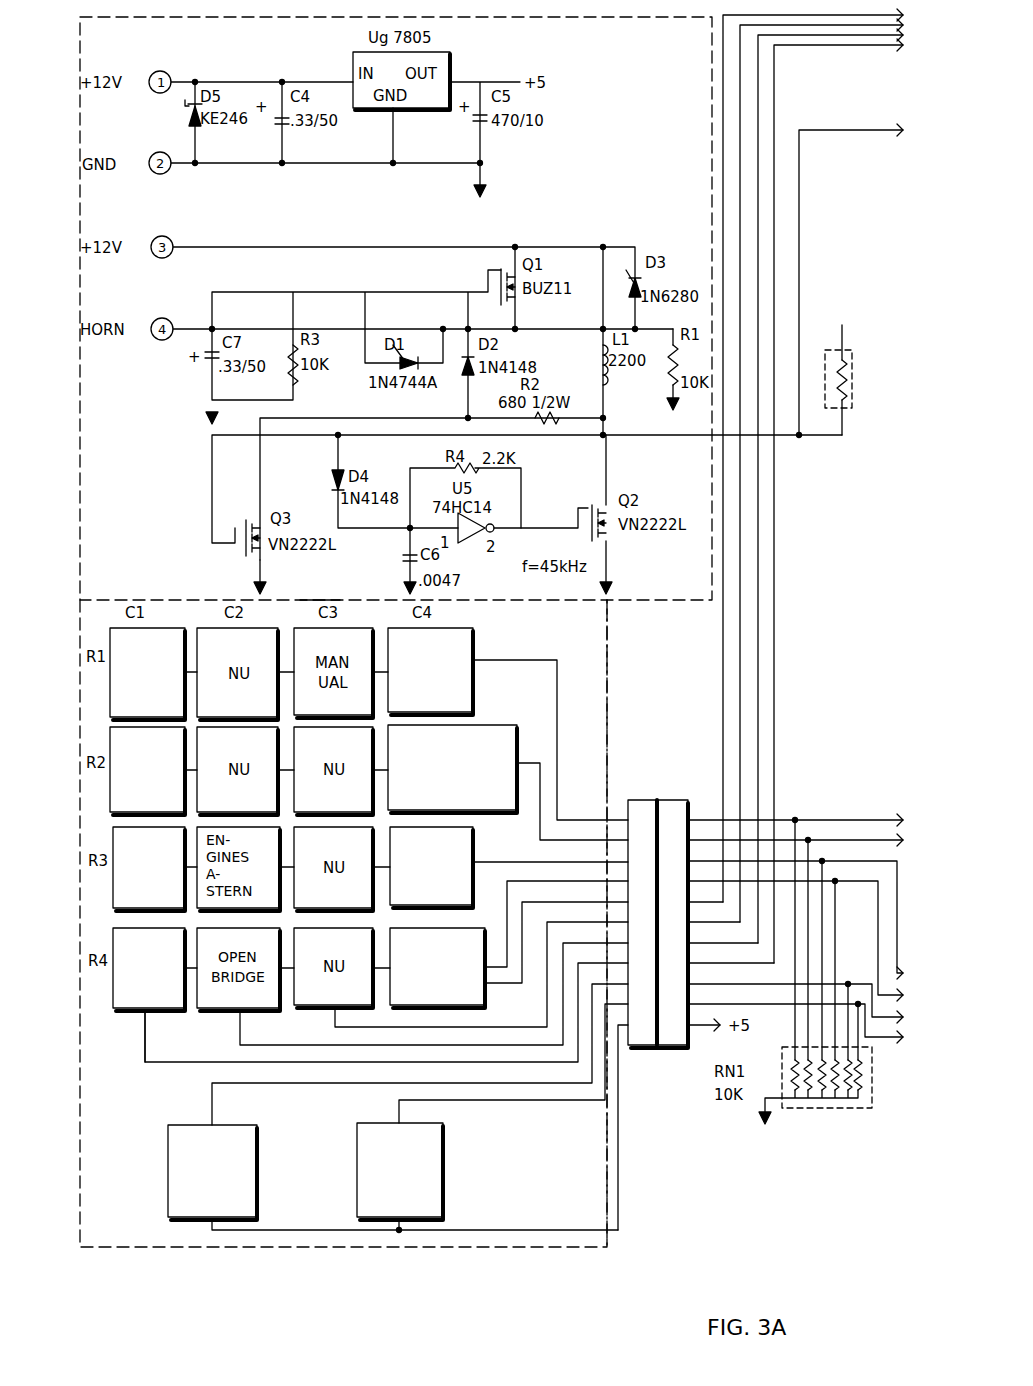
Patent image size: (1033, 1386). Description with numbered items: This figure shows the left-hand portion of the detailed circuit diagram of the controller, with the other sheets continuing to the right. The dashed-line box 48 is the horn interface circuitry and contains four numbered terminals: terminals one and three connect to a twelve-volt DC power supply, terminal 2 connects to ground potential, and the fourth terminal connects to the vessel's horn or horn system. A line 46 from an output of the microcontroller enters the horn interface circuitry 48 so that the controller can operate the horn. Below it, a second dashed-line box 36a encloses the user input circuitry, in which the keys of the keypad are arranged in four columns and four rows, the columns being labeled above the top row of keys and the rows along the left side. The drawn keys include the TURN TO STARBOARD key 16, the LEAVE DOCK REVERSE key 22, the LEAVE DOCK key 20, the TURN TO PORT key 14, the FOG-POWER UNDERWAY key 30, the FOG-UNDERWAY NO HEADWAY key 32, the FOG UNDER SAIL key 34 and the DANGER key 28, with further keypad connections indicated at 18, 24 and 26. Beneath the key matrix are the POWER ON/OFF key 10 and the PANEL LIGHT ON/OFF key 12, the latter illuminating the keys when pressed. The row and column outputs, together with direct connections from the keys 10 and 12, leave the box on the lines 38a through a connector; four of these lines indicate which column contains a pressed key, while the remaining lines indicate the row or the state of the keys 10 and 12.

The terminal 2 is at (812, 1226).
The POWER ON/OFF key 10 is at (188, 1220).
The PANEL LIGHT ON/OFF key 12 is at (375, 1220).
The turn to port switch 14 is at (113, 990).
The turn to starboard switch 16 is at (110, 640).
The switch column line 18 is at (205, 1012).
The leave dock switch 20 is at (113, 845).
The leave dock reverse switch 22 is at (110, 742).
The switch row line 24 is at (113, 813).
The switch matrix 26 is at (300, 620).
The danger switch 28 is at (487, 1006).
The fog power underway switch 30 is at (474, 643).
The fog underway no headway switch 32 is at (490, 725).
The fog under sail switch 34 is at (476, 838).
The user input circuitry 36a is at (612, 1241).
The lines 38a is at (623, 1048).
The line 46 is at (830, 437).
The horn interface circuitry 48 is at (80, 160).